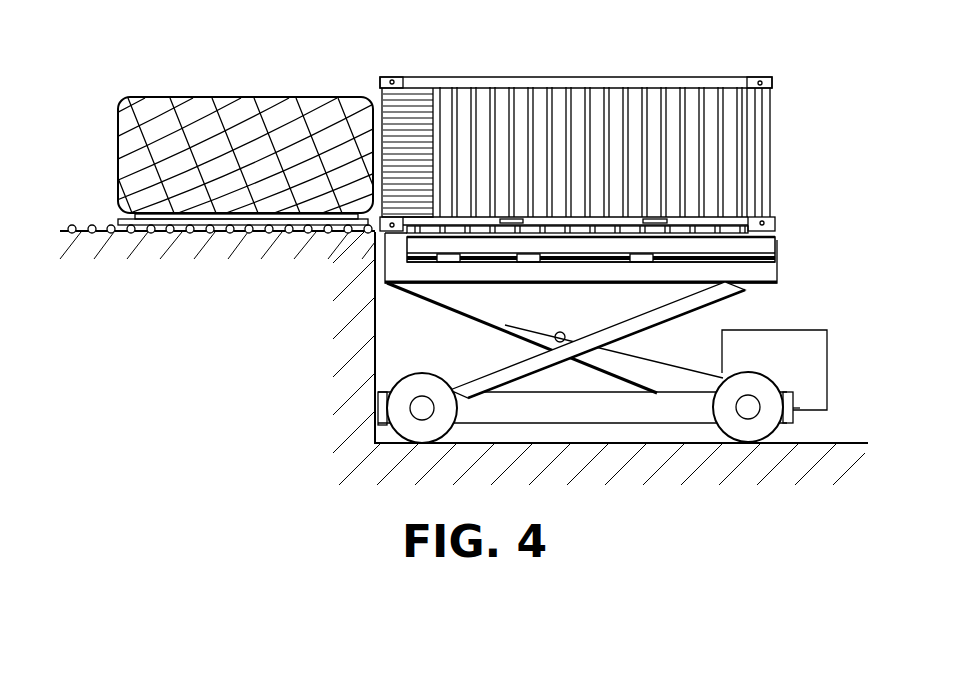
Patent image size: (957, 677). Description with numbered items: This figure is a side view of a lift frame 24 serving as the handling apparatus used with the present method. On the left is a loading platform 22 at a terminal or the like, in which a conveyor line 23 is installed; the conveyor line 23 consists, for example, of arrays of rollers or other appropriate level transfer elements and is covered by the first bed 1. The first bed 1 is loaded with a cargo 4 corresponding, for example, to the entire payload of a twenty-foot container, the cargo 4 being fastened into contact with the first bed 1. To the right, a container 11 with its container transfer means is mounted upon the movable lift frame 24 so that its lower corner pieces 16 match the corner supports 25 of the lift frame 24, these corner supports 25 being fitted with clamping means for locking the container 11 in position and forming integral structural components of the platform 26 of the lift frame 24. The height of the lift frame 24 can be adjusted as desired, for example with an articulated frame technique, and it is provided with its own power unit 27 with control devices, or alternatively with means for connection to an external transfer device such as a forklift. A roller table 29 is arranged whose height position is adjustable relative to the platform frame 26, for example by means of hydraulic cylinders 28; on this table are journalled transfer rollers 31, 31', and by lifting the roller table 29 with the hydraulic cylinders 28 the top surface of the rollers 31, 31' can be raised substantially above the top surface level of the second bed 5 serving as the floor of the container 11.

The first bed 1 is at (116, 216).
The cargo 4 is at (256, 101).
The second bed 5 is at (667, 245).
The container 11 is at (594, 110).
The lower corner pieces 16 is at (388, 76).
The loading platform 22 is at (221, 298).
The conveyor line 23 is at (93, 237).
The lift frame 24 is at (676, 298).
The corner supports 25 is at (777, 241).
The platform 26 is at (408, 270).
The power unit 27 is at (810, 376).
The hydraulic cylinders 28 is at (452, 262).
The roller table 29 is at (707, 282).
The rollers 31 is at (638, 182).
The rollers 31' is at (667, 229).